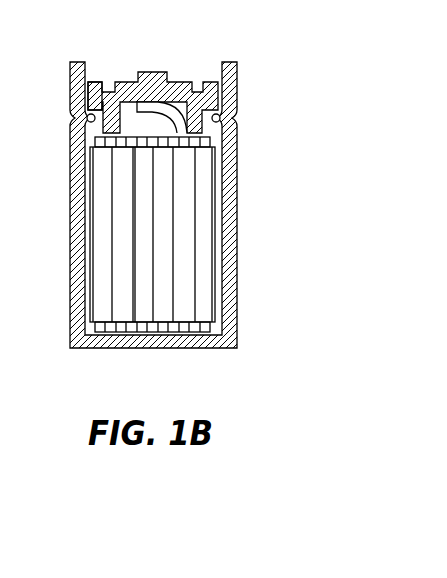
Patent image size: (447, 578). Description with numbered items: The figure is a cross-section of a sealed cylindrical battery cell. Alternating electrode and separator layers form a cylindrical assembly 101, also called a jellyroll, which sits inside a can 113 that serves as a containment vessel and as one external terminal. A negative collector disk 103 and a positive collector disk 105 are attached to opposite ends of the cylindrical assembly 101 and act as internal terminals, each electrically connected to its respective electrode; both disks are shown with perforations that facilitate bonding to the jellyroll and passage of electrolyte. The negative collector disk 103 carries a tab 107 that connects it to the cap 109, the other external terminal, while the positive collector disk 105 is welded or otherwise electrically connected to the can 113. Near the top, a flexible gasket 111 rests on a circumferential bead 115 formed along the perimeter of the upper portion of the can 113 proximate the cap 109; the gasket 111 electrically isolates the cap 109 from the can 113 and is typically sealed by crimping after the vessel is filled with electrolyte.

The cylindrical assembly 101 is at (182, 257).
The negative collector disk 103 is at (205, 143).
The positive collector disk 105 is at (160, 328).
The tab 107 is at (222, 118).
The cap 109 is at (155, 70).
The flexible gasket 111 is at (93, 79).
The can 113 is at (238, 78).
The circumferential bead 115 is at (84, 118).